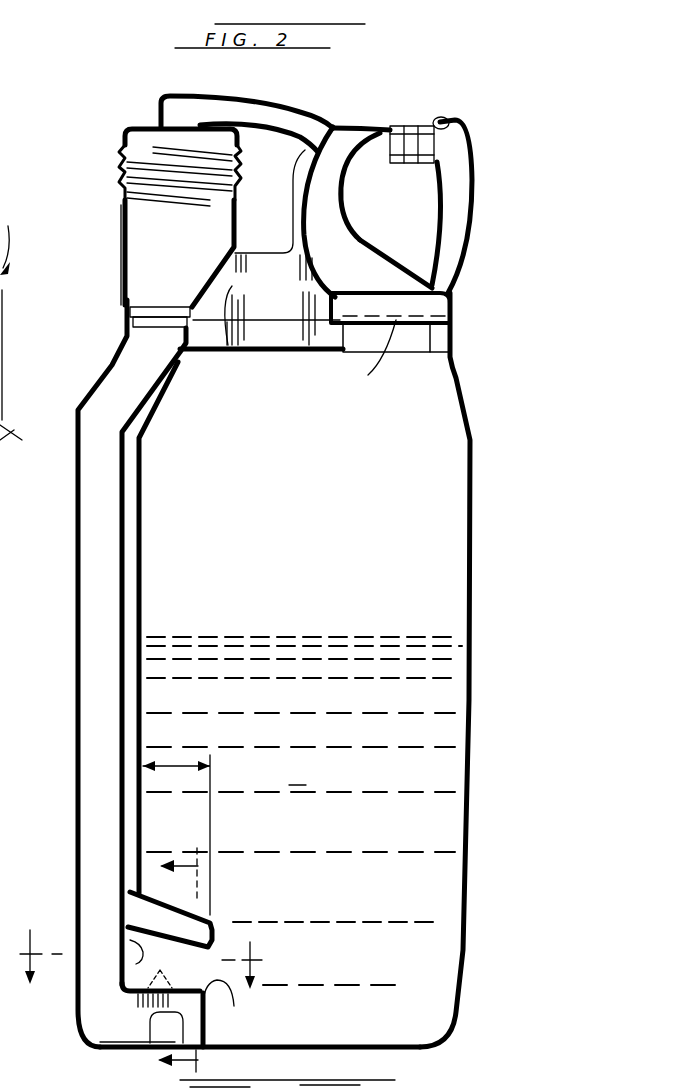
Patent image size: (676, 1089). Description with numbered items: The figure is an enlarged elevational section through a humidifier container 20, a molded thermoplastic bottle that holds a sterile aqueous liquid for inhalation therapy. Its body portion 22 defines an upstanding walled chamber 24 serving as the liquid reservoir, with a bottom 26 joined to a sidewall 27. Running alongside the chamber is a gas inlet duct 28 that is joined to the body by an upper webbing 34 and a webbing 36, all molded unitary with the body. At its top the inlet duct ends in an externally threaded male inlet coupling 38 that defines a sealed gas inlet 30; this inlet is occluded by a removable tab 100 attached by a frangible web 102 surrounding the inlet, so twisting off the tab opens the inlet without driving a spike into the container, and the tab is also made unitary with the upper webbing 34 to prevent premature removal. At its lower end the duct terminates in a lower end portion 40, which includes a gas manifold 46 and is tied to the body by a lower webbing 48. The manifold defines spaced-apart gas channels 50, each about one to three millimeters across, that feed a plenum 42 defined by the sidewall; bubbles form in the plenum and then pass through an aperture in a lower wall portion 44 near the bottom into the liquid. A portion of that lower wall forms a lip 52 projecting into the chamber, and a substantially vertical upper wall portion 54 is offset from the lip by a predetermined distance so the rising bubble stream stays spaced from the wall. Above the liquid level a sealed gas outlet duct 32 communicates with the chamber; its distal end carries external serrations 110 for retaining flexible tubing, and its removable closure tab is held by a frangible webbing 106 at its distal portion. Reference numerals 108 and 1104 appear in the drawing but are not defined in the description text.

The humidifier container 20 is at (147, 64).
The body portion 22 is at (466, 392).
The walled chamber 24 is at (316, 558).
The bottom 26 is at (347, 1045).
The sidewall 27 is at (463, 513).
The gas inlet duct 28 is at (72, 764).
The gas inlet 30 is at (132, 127).
The gas outlet duct 32 is at (356, 128).
The upper webbing 34 is at (309, 308).
The webbing 36 is at (120, 905).
The male inlet coupling 38 is at (118, 243).
The lower end portion 40 is at (108, 1050).
The plenum 42 is at (137, 958).
The lower wall portion 44 is at (321, 968).
The gas manifold 46 is at (160, 1012).
The lower webbing 48 is at (200, 1028).
The gas channels 50 is at (162, 980).
The lip 52 is at (218, 931).
The upper wall portion 54 is at (143, 608).
The removable tab 100 is at (272, 97).
The frangible web 102 is at (188, 125).
The webbing 106 is at (396, 268).
The hinge knob 108 is at (442, 116).
The external serrations 110 is at (404, 124).
The inner handle loop 1104 is at (437, 203).